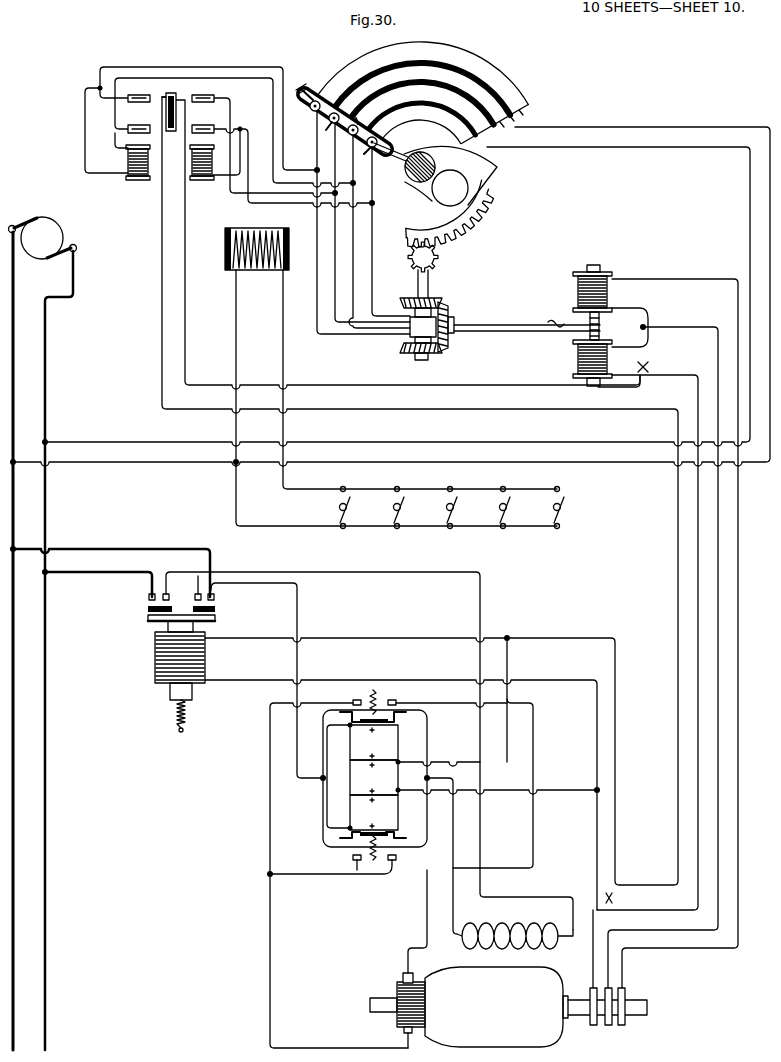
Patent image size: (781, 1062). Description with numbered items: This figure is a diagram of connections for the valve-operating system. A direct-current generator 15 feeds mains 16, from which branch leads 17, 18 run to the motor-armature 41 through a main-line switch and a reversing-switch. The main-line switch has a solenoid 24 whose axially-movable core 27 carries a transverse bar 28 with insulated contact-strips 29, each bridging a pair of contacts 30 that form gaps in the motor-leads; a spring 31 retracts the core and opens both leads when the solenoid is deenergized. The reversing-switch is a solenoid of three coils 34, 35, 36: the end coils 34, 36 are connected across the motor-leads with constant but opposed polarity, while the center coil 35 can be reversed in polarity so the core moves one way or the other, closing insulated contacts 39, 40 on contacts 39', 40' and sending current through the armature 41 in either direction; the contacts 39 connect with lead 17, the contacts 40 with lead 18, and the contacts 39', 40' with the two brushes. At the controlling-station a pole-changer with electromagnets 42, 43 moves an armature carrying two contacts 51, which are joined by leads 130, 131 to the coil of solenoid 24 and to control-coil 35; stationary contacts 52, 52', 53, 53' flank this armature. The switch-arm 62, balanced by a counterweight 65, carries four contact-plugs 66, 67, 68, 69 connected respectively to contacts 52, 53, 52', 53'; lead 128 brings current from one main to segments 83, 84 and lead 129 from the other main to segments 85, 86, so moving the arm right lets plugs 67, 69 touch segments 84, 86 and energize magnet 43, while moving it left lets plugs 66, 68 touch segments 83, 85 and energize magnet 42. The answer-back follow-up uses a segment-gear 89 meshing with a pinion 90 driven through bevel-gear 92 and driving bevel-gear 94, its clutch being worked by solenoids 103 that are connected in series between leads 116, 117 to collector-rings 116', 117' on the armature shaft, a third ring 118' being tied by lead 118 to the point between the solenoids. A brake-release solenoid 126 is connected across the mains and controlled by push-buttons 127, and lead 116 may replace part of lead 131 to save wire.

The direct-current generator 15 is at (50, 237).
The mains 16 is at (24, 641).
The branch lead 17 is at (95, 555).
The branch lead 18 is at (80, 578).
The solenoid 24 is at (153, 660).
The axially-movable core 27 is at (170, 698).
The transverse bar 28 is at (217, 620).
The contact-strips 29 is at (244, 612).
The contacts 30 is at (226, 597).
The spring 31 is at (192, 716).
The end coil 34 is at (398, 737).
The center coil 35 is at (398, 779).
The end coil 36 is at (398, 818).
The insulated contacts 39 is at (344, 777).
The insulated contacts 40 is at (406, 778).
The contacts 39' is at (348, 775).
The contacts 40' is at (409, 774).
The motor-armature 41 is at (508, 959).
The electromagnet 42 is at (138, 172).
The electromagnet 43 is at (202, 172).
The insulated contacts 51 is at (162, 101).
The stationary contact 52 is at (133, 120).
The stationary contact 52' is at (137, 89).
The stationary contact 53 is at (203, 89).
The stationary contact 53' is at (205, 120).
The switch-arm 62 is at (392, 163).
The counterweight 65 is at (450, 176).
The contact-plug 66 is at (312, 95).
The contact-plug 67 is at (338, 110).
The contact-plug 68 is at (360, 122).
The contact-plug 69 is at (380, 134).
The segment 83 is at (423, 73).
The segment 84 is at (422, 89).
The segment 85 is at (421, 103).
The segment 86 is at (422, 123).
The segment-gear 89 is at (468, 222).
The pinion 90 is at (440, 260).
The bevel-gear 92 is at (444, 300).
The driving bevel-gear 94 is at (450, 352).
The solenoids 103 is at (572, 358).
The lead 116 is at (645, 672).
The lead 117 is at (675, 625).
The lead 118 is at (663, 648).
The collector-ring 116' is at (587, 1022).
The collector-ring 117' is at (643, 1015).
The collector-ring 118' is at (619, 1022).
The solenoid 126 is at (257, 240).
The push-buttons 127 is at (466, 508).
The lead 128 is at (676, 122).
The lead 129 is at (680, 162).
The lead 130 is at (678, 612).
The lead 131 is at (560, 684).